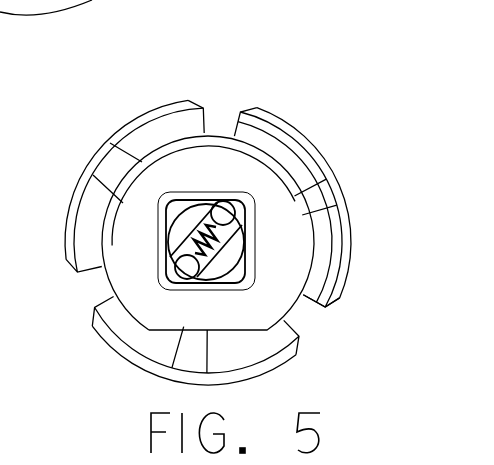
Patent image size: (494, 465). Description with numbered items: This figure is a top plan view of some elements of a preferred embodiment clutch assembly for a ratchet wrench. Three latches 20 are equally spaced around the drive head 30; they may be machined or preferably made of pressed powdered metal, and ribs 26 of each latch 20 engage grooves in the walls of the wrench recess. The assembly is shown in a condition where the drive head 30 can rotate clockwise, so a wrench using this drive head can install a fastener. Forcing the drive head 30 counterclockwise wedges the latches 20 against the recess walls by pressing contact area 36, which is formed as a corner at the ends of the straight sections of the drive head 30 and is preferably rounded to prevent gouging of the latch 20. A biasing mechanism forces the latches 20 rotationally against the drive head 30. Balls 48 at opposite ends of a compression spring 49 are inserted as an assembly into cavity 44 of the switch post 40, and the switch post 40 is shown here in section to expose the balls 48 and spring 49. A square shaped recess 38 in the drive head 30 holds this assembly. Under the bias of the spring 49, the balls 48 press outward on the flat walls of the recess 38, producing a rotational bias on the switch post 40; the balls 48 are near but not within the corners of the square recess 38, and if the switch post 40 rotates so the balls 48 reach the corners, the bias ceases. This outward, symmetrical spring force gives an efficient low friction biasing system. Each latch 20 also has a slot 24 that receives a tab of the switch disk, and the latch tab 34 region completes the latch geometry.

The latch 20 is at (300, 165).
The slot 24 is at (322, 195).
The rib 26 is at (292, 127).
The drive head 30 is at (160, 175).
The tab 34 is at (212, 107).
The contact area 36 is at (312, 242).
The square shaped recess 38 is at (182, 202).
The switch post 40 is at (231, 258).
The cavity 44 is at (183, 243).
The ball 48 is at (222, 208).
The compression spring 49 is at (203, 244).